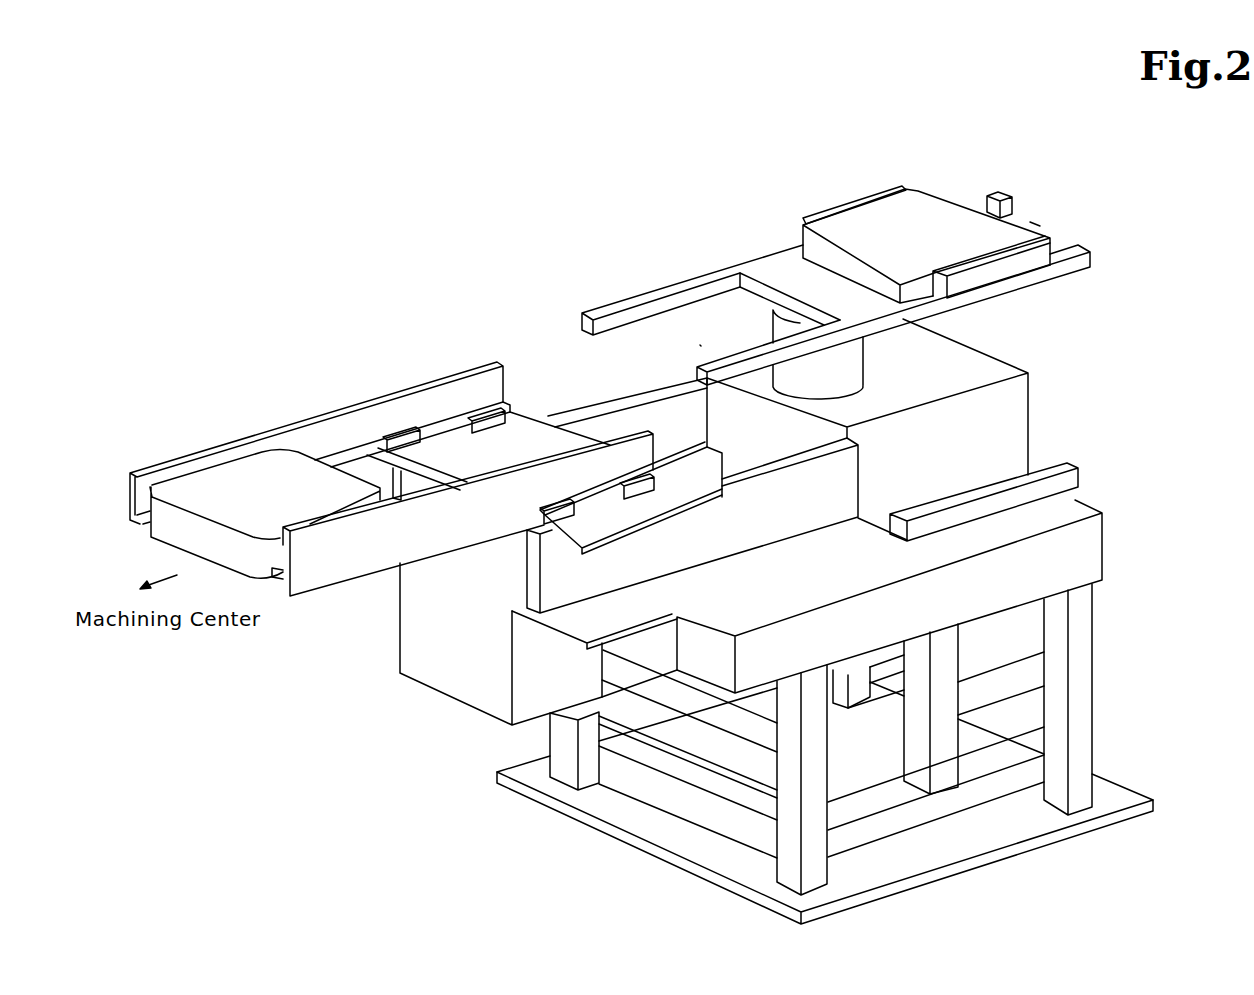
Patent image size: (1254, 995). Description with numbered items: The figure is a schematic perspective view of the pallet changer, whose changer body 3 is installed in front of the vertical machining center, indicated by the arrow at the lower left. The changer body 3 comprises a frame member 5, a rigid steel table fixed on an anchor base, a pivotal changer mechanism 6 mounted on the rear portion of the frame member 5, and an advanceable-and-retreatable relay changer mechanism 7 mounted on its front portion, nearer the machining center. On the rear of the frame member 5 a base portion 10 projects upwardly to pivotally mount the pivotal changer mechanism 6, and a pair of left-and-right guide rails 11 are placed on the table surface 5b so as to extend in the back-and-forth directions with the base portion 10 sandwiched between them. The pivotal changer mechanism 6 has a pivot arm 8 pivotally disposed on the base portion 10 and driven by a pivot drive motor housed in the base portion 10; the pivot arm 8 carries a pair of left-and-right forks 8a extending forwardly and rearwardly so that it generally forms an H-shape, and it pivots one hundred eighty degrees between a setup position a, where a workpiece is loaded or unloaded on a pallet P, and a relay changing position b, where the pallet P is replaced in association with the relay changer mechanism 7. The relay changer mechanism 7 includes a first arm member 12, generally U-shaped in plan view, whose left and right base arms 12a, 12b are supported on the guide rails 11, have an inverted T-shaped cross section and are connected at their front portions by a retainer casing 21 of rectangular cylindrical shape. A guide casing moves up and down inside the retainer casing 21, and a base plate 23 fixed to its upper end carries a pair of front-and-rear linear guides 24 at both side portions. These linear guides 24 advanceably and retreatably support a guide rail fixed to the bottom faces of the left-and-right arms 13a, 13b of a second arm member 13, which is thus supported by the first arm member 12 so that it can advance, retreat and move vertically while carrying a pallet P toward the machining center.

The changer body 3 is at (537, 294).
The frame member 5 is at (1106, 666).
The table surface 5b is at (842, 580).
The pivotal changer mechanism 6 is at (811, 215).
The relay changer mechanism 7 is at (401, 383).
The pivot arm 8 is at (768, 252).
The fork 8a is at (648, 290).
The base portion 10 is at (980, 357).
The guide rail 11 is at (1077, 468).
The first arm member 12 is at (469, 718).
The base arm 12a is at (862, 478).
The base arm 12b is at (595, 400).
The second arm member 13 is at (339, 592).
The arm 13a is at (437, 537).
The arm 13b is at (298, 420).
The retainer casing 21 is at (430, 678).
The base plate 23 is at (627, 515).
The linear guide 24 is at (490, 422).
The pallet P is at (935, 210).
The setup position a is at (1035, 222).
The relay changing position b is at (675, 342).